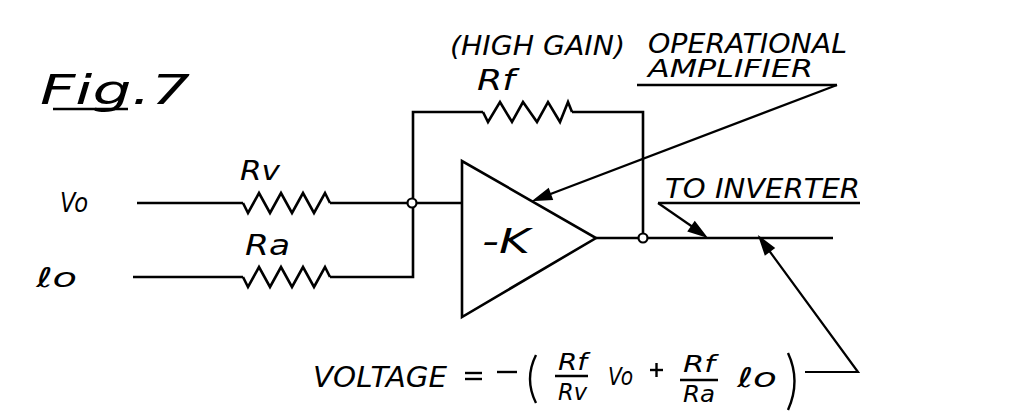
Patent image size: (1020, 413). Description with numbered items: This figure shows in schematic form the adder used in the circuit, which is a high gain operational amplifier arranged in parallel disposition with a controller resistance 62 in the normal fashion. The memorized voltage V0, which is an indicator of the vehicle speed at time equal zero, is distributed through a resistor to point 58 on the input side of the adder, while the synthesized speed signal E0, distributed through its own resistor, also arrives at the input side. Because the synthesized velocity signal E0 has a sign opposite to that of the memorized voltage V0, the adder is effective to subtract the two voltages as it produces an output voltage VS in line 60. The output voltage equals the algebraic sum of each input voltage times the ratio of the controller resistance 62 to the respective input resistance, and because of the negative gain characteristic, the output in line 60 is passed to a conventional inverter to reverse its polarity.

The point on the input side of the adder 58 is at (408, 199).
The line 60 is at (640, 243).
The controller resistance 62 is at (538, 116).